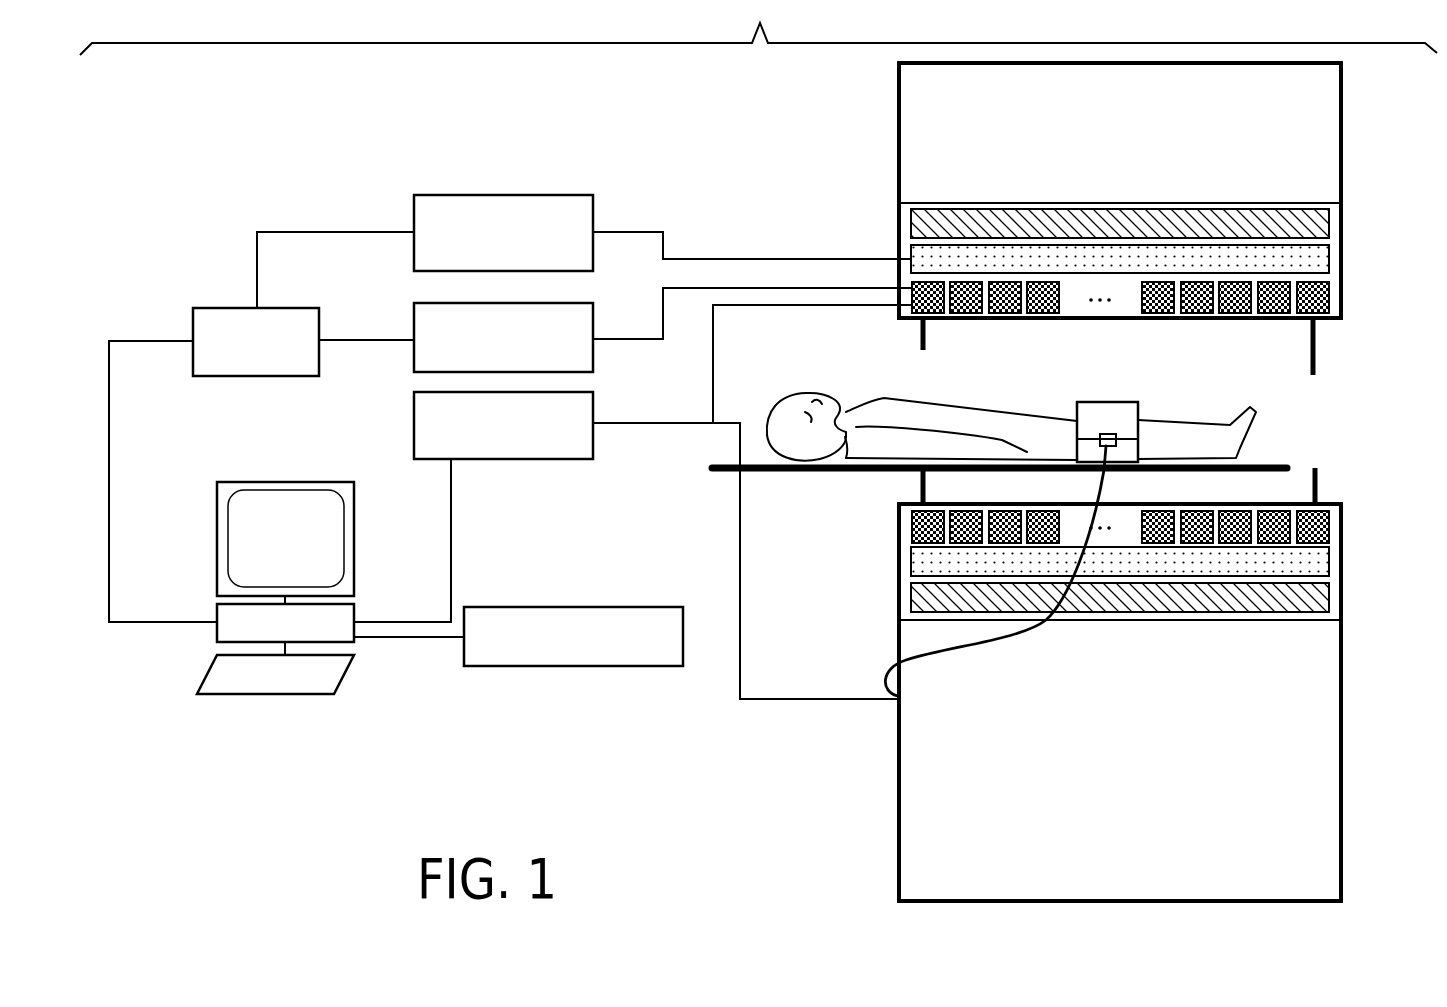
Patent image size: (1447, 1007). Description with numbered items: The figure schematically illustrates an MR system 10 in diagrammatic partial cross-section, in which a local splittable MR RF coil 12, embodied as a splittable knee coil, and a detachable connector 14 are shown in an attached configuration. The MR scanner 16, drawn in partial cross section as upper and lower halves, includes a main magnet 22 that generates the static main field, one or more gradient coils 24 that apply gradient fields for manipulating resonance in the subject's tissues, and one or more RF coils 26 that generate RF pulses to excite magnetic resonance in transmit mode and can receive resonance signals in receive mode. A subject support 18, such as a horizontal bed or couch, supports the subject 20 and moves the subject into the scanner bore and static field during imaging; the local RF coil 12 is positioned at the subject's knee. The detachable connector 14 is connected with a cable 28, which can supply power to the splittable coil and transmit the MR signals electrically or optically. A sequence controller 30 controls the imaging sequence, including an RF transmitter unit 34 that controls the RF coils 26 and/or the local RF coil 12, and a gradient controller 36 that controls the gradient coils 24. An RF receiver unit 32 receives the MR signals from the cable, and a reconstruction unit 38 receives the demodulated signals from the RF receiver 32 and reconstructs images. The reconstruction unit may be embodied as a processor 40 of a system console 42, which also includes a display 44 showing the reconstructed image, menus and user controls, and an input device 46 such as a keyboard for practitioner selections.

The MR system 10 is at (758, 27).
The local splittable MR RF coil 12 is at (1130, 402).
The detachable connector 14 is at (1106, 434).
The MR scanner 16 is at (1343, 141).
The subject support 18 is at (826, 473).
The subject 20 is at (890, 411).
The main magnet 22 is at (1331, 229).
The gradient coils 24 is at (1331, 258).
The RF coils 26 is at (1331, 300).
The cable 28 is at (892, 660).
The sequence controller 30 is at (193, 319).
The RF receiver unit 32 is at (414, 425).
The RF transmitter unit 34 is at (414, 317).
The gradient controller 36 is at (414, 207).
The reconstruction unit 38 is at (603, 667).
The processor 40 is at (216, 608).
The system console 42 is at (210, 458).
The display 44 is at (216, 540).
The input device 46 is at (212, 669).